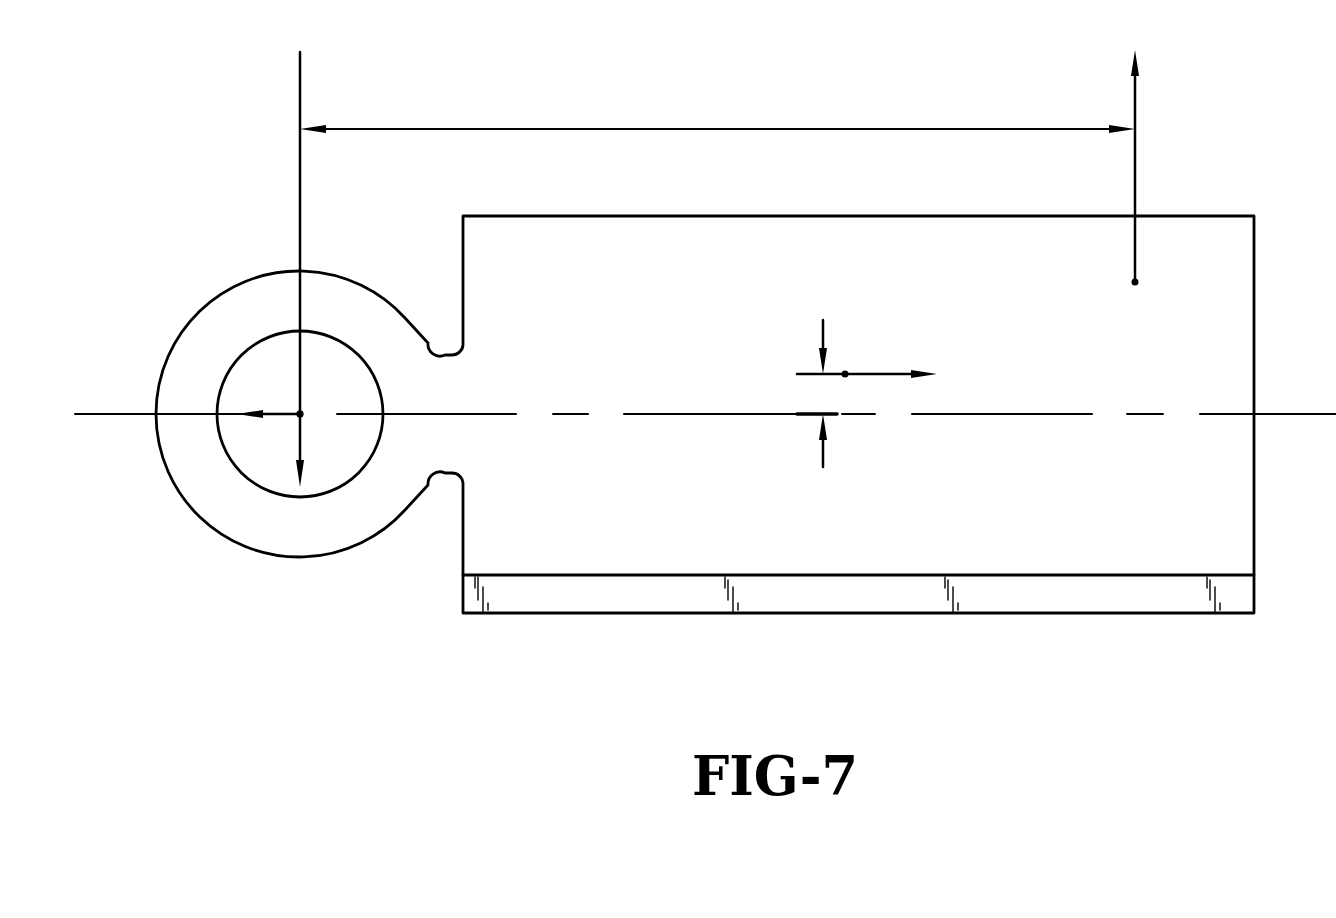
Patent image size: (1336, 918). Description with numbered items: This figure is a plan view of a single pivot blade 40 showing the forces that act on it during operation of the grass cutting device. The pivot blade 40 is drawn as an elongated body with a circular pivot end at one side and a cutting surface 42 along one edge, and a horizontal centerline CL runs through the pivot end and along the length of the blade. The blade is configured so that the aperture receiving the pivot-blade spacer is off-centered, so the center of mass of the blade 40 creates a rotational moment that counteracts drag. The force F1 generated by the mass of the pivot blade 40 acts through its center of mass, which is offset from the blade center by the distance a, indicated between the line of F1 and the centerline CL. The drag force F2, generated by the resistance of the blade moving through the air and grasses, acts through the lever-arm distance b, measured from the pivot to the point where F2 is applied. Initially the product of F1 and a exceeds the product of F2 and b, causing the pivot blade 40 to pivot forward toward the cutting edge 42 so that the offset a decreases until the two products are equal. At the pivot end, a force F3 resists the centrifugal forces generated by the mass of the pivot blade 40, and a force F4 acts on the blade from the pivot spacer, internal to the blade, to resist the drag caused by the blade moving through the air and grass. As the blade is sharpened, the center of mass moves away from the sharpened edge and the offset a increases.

The pivot-blade 40 is at (1255, 537).
The cutting surface 42 is at (1192, 614).
The force generated by the mass of the pivot blade F1 is at (875, 374).
The drag force F2 is at (1135, 113).
The force resisting centrifugal forces F3 is at (277, 412).
The force from the pivot spacer F4 is at (300, 437).
The offset distance of the center of mass from the blade center a is at (815, 398).
The distance through which the drag force acts b is at (543, 129).
The centerline CL is at (1263, 412).